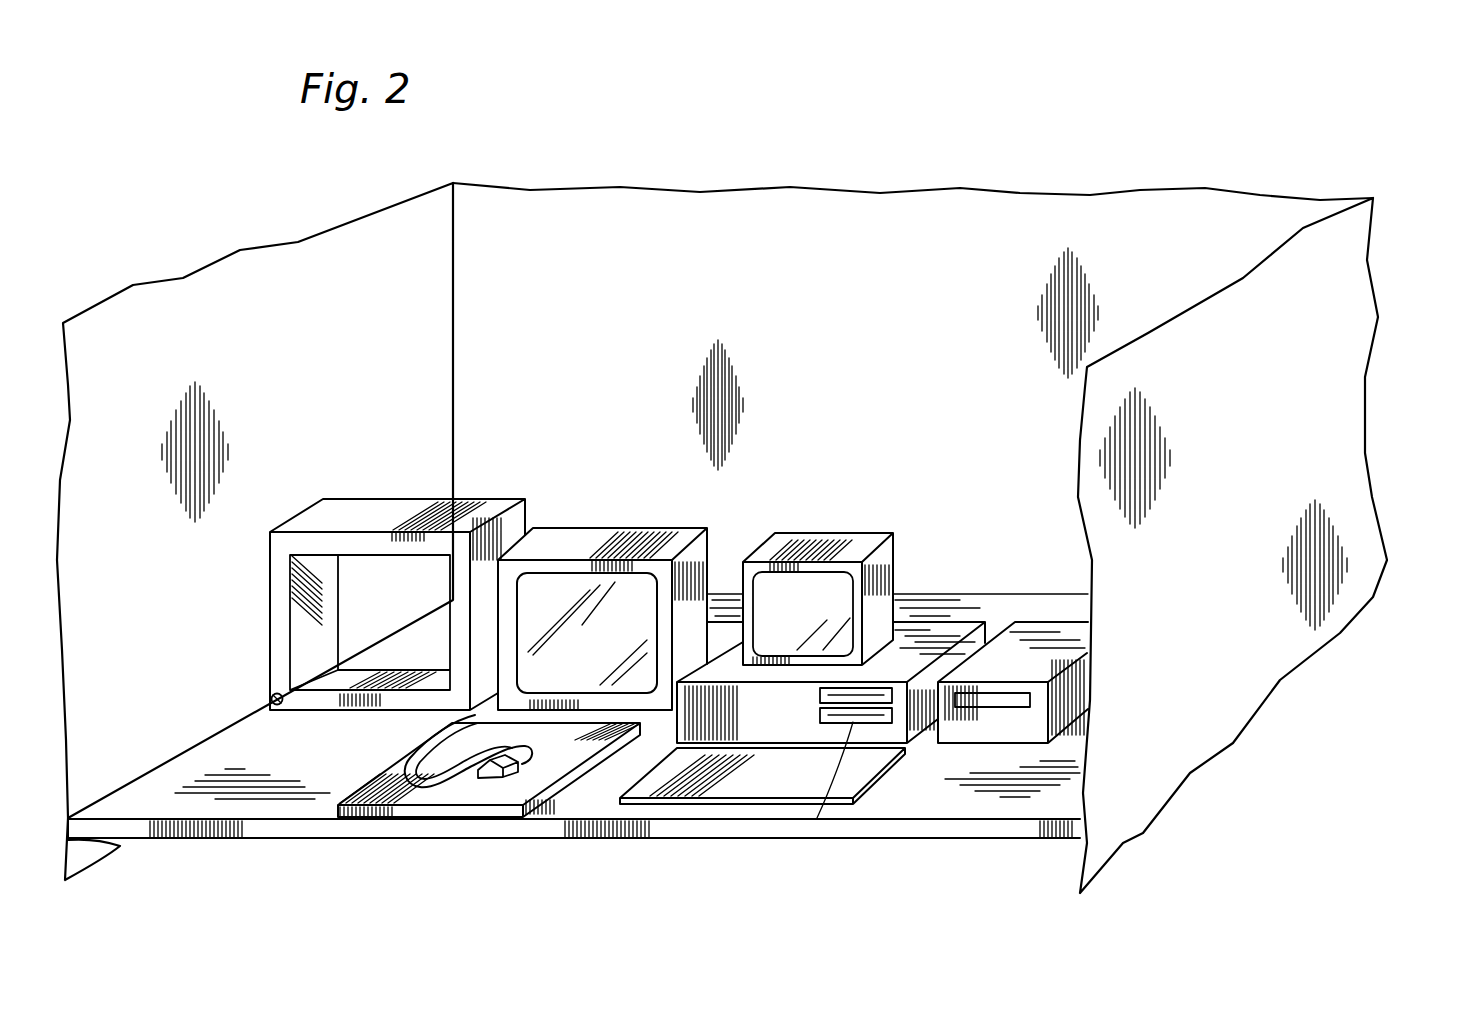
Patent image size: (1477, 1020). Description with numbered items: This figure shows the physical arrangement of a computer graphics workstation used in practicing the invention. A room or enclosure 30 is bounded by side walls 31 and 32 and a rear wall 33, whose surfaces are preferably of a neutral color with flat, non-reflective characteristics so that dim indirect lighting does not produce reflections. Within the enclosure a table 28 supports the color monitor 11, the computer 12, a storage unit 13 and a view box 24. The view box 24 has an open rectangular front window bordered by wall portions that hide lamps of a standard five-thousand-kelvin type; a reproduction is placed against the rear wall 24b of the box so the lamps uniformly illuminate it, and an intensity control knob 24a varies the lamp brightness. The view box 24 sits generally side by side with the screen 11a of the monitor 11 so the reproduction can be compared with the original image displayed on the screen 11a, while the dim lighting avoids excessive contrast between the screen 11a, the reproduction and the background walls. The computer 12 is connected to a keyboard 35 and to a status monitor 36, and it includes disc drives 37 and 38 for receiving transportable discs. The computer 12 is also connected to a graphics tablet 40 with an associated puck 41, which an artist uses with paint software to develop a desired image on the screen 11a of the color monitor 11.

The room or enclosure 30 is at (759, 512).
The side wall 31 is at (362, 243).
The side wall 32 is at (1183, 330).
The rear wall 33 is at (1000, 220).
The table 28 is at (178, 749).
The view box 24 is at (385, 569).
The intensity control knob 24a is at (262, 698).
The rear wall of the box 24b is at (367, 580).
The color monitor 11 is at (652, 583).
The screen 11a is at (580, 590).
The status monitor 36 is at (872, 527).
The computer 12 is at (833, 641).
The disc drive 37 is at (820, 692).
The storage unit 13 is at (1033, 613).
The keyboard 35 is at (877, 770).
The disc drive 38 is at (817, 818).
The graphics tablet 40 is at (370, 790).
The puck 41 is at (502, 777).